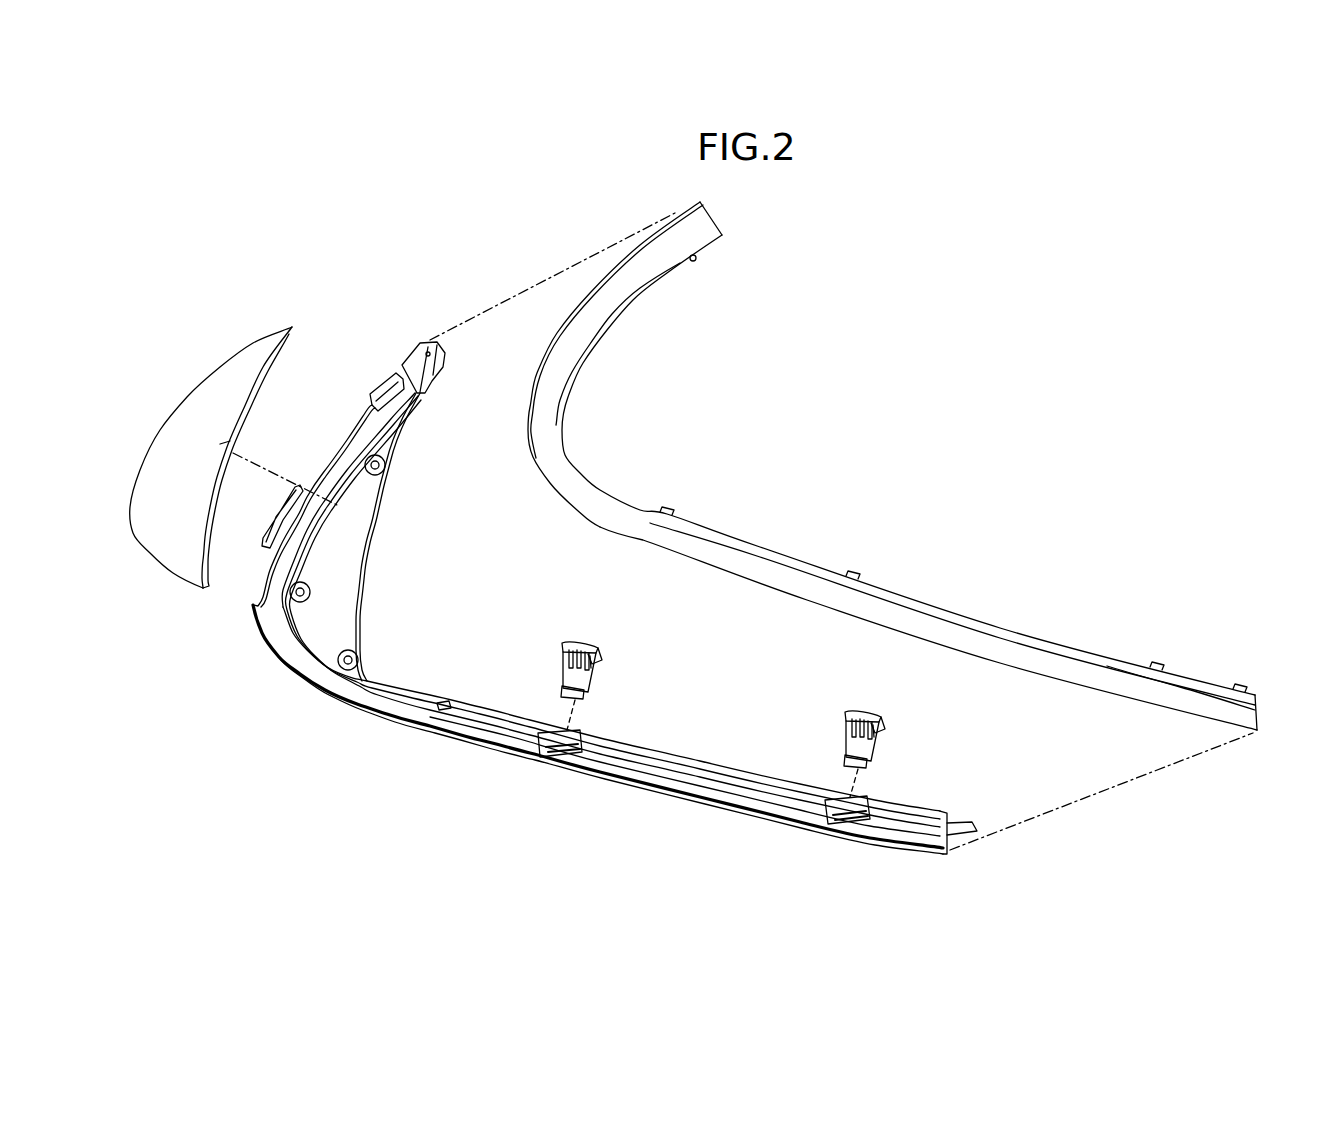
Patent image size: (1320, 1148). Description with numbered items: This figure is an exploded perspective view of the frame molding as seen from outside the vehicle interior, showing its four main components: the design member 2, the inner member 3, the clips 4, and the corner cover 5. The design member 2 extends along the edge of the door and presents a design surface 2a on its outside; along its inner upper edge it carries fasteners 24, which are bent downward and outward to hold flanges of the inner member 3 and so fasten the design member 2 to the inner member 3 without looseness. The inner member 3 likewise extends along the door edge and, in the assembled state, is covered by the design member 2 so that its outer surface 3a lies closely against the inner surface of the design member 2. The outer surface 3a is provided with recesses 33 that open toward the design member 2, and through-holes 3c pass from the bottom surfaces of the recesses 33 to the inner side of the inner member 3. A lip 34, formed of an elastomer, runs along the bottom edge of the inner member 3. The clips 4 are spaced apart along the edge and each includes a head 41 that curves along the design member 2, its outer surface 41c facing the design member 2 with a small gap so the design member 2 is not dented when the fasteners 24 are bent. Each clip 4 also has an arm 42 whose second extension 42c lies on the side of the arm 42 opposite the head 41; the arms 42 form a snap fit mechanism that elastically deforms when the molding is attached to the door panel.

The design member 2 is at (783, 549).
The design surface 2a is at (1017, 657).
The fasteners 24 is at (669, 511).
The inner member 3 is at (440, 745).
The outer surface of the inner member 3a is at (700, 772).
The through-holes 3c is at (556, 758).
The recesses 33 is at (578, 734).
The lip 34 is at (698, 808).
The clips 4 is at (574, 639).
The head 41 is at (721, 690).
The outer surface of the head 41c is at (593, 646).
The arm 42 is at (563, 672).
The second extension 42c is at (562, 691).
The corner cover 5 is at (215, 371).